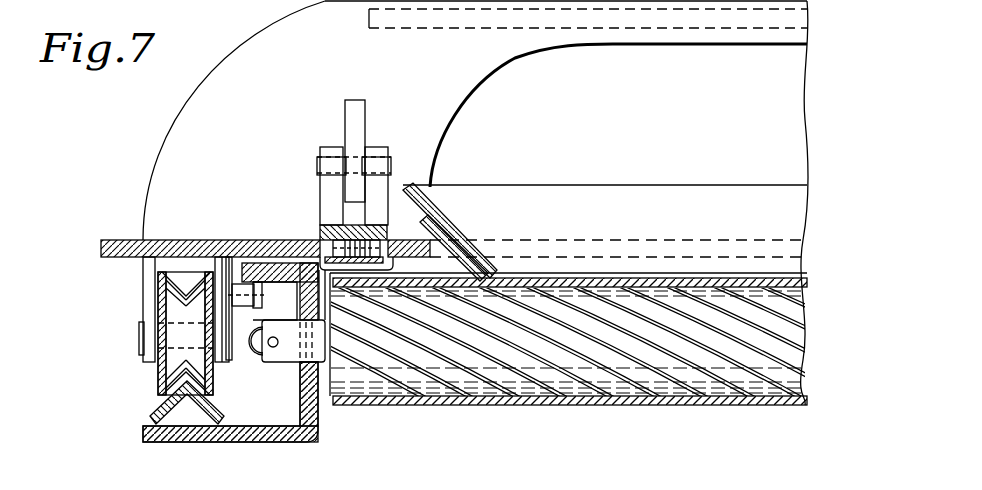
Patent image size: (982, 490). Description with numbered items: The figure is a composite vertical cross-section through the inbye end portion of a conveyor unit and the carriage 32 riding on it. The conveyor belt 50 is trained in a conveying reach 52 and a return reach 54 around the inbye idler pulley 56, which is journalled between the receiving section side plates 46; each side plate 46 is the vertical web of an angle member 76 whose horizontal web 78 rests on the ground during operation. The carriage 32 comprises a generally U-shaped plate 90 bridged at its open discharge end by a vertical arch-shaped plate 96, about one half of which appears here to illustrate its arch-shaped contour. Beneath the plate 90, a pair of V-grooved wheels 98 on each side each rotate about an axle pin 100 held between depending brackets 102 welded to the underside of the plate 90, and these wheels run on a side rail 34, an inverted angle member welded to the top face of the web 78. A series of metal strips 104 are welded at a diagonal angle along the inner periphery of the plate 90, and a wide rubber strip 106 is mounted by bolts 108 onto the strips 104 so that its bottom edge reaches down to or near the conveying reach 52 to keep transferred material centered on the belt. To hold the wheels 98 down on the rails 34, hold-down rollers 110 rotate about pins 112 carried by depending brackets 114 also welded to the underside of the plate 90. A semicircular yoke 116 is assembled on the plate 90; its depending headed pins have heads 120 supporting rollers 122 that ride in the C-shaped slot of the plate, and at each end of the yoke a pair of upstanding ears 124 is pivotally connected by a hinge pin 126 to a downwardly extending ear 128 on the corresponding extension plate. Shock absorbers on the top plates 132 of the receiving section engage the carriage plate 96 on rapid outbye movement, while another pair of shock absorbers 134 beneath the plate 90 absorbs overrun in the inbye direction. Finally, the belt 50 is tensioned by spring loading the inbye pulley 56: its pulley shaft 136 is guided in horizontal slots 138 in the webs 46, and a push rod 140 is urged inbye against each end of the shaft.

The carriage 32 is at (140, 236).
The side rail 34 is at (152, 410).
The receiving section side plate 46 is at (316, 406).
The conveyor belt 50 is at (712, 276).
The conveying reach 52 is at (597, 278).
The return reach 54 is at (656, 405).
The inbye idler pulley 56 is at (805, 318).
The angle member 76 is at (320, 444).
The horizontal web 78 is at (232, 443).
The U-shaped plate 90 is at (101, 248).
The arch-shaped plate 96 is at (264, 38).
The V-grooved wheel 98 is at (160, 378).
The axle pin 100 is at (140, 340).
The depending bracket 102 is at (218, 266).
The metal strip 104 is at (440, 233).
The rubber strip 106 is at (436, 192).
The bolt 108 is at (470, 234).
The hold-down roller 110 is at (230, 358).
The pin 112 is at (258, 300).
The depending bracket 114 is at (247, 257).
The semicircular yoke 116 is at (320, 229).
The pin head 120 is at (404, 241).
The roller 122 is at (345, 247).
The upstanding ear 124 is at (323, 148).
The hinge pin 126 is at (317, 165).
The downwardly extending ear 128 is at (353, 100).
The top plate 132 is at (258, 264).
The shock absorber 134 is at (158, 286).
The pulley shaft 136 is at (273, 348).
The horizontal slot 138 is at (300, 352).
The push rod 140 is at (258, 350).